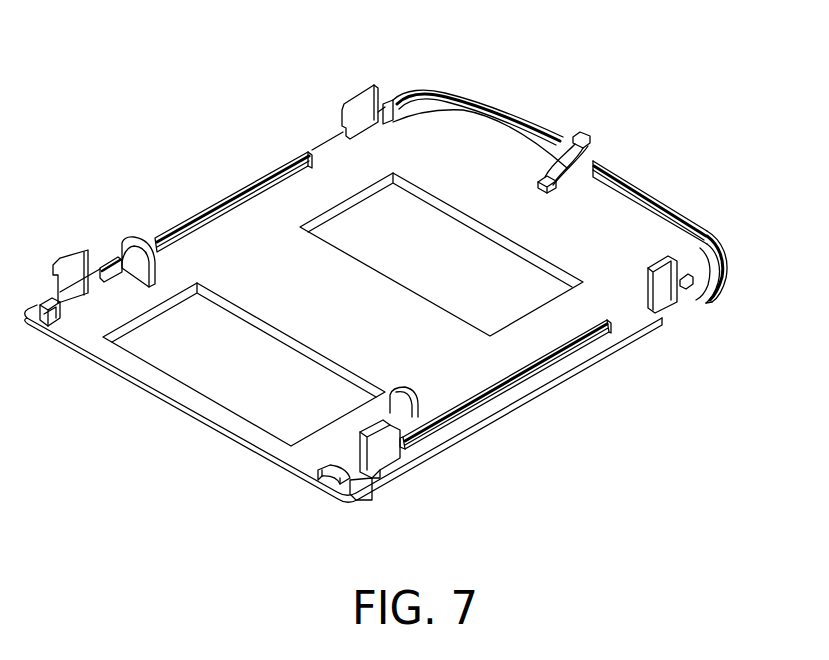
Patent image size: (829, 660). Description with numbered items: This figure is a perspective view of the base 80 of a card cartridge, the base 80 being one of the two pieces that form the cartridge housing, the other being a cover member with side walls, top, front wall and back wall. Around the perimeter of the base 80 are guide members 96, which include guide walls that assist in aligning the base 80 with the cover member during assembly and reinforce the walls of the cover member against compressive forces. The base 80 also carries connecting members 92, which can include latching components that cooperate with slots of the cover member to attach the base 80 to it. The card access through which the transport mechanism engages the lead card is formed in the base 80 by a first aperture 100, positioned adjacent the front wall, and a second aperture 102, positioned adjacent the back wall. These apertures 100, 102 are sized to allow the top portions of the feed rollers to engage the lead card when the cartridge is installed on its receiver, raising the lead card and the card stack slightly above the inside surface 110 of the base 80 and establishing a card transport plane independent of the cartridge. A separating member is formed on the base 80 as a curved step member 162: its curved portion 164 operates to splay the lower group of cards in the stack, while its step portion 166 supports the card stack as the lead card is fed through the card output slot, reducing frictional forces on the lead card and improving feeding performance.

The base 80 is at (600, 355).
The connecting members 92 is at (710, 255).
The guide members 96 is at (520, 115).
The first aperture 100 is at (247, 402).
The second aperture 102 is at (363, 213).
The inside surface 110 is at (468, 378).
The curved step member 162 is at (582, 140).
The curved portion 164 is at (590, 155).
The step portion 166 is at (553, 187).